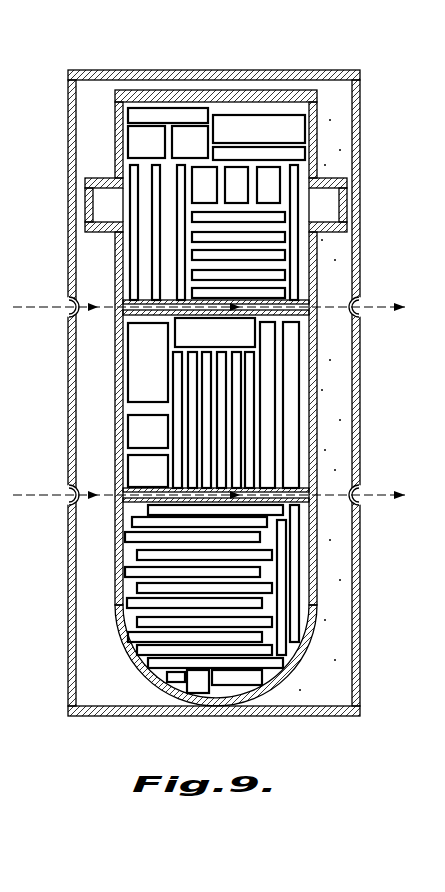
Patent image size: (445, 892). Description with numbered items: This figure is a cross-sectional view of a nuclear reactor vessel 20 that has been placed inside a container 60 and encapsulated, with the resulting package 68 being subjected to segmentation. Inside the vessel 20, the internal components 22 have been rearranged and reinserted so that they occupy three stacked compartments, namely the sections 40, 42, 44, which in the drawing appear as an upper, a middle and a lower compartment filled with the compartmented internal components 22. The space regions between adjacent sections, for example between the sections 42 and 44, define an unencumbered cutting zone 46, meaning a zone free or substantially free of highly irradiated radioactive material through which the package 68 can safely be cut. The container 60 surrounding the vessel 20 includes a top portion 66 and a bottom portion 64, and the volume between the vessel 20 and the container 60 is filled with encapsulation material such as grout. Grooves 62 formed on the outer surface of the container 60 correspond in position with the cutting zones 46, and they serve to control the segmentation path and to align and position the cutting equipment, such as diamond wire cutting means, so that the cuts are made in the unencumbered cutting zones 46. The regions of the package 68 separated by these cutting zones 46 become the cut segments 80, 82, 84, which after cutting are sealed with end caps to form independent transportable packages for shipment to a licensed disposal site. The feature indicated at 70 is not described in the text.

The vessel 20 is at (323, 347).
The internal components 22 is at (127, 167).
The section 40 is at (315, 112).
The section 42 is at (316, 393).
The section 44 is at (316, 556).
The unencumbered cutting zone 46 is at (141, 306).
The container 60 is at (358, 248).
The grooves 62 is at (360, 305).
The bottom portion 64 is at (113, 716).
The top portion 66 is at (242, 78).
The package 68 is at (82, 121).
The left alignment notch 70 is at (52, 306).
The cut segment 80 is at (366, 171).
The cut segment 82 is at (371, 411).
The cut segment 84 is at (371, 604).